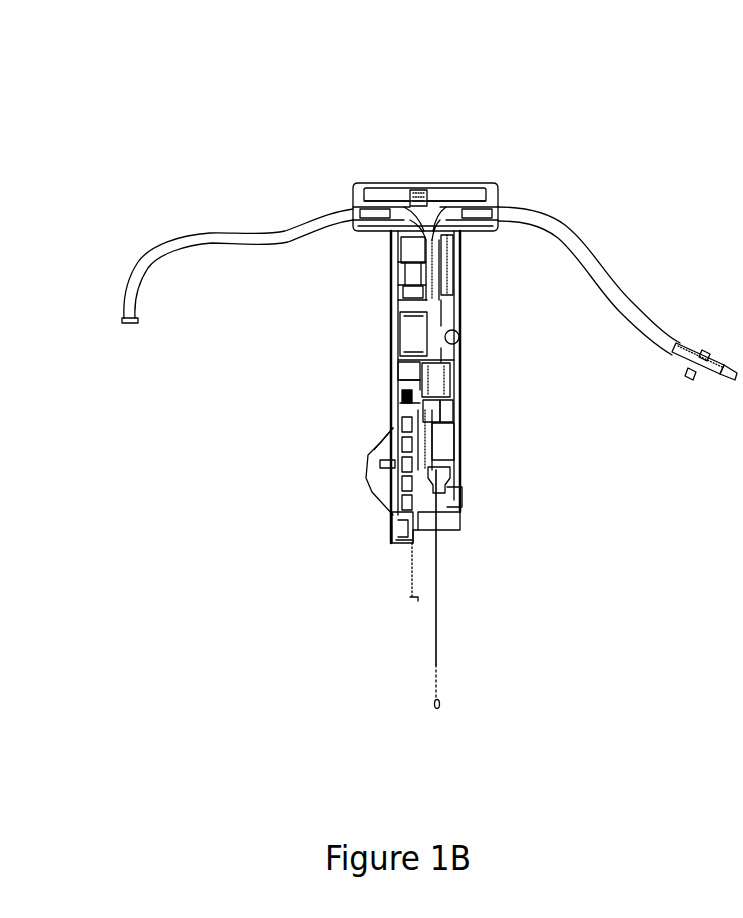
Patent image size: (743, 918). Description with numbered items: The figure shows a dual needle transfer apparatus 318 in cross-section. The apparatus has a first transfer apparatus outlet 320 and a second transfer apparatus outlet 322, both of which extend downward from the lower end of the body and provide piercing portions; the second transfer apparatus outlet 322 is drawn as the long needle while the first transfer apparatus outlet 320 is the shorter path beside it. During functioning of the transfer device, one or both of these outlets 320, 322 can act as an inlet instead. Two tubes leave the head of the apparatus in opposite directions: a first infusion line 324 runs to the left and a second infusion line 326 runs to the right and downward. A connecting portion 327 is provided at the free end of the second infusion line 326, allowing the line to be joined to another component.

The dual needle transfer apparatus 318 is at (427, 140).
The first transfer apparatus outlet 320 is at (410, 597).
The second transfer apparatus outlet 322 is at (443, 705).
The first infusion line 324 is at (245, 250).
The second infusion line 326 is at (518, 230).
The connecting portion 327 is at (688, 345).